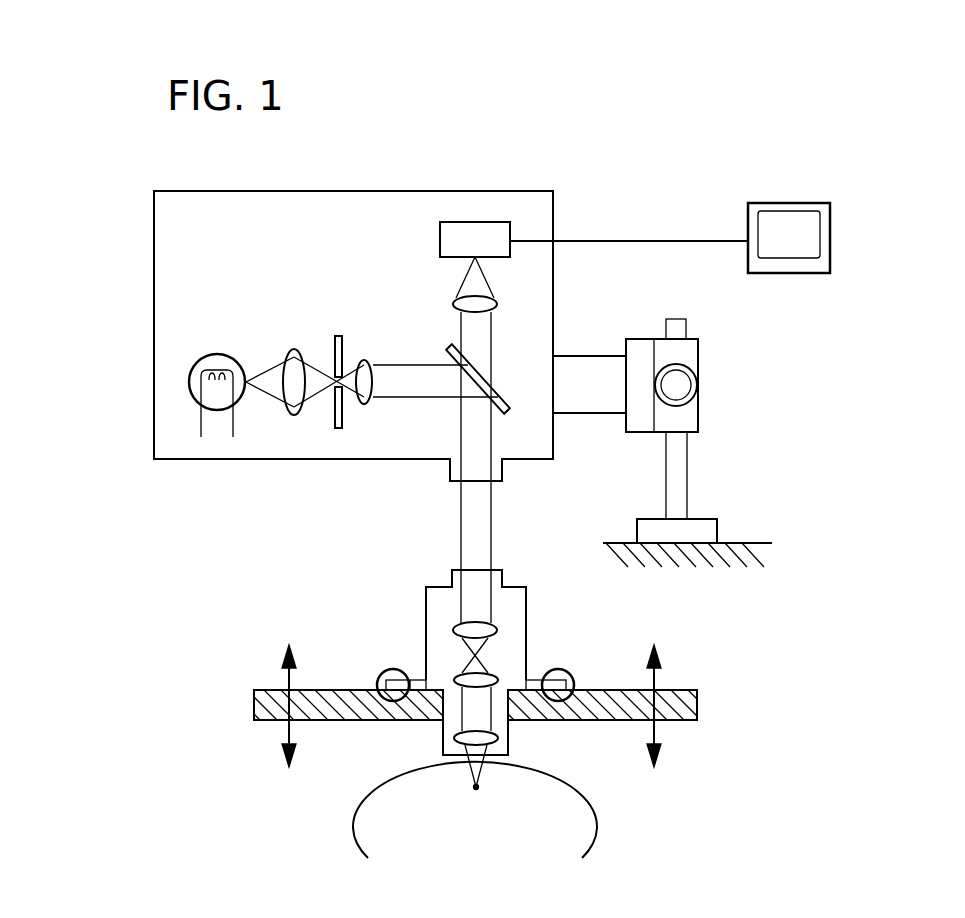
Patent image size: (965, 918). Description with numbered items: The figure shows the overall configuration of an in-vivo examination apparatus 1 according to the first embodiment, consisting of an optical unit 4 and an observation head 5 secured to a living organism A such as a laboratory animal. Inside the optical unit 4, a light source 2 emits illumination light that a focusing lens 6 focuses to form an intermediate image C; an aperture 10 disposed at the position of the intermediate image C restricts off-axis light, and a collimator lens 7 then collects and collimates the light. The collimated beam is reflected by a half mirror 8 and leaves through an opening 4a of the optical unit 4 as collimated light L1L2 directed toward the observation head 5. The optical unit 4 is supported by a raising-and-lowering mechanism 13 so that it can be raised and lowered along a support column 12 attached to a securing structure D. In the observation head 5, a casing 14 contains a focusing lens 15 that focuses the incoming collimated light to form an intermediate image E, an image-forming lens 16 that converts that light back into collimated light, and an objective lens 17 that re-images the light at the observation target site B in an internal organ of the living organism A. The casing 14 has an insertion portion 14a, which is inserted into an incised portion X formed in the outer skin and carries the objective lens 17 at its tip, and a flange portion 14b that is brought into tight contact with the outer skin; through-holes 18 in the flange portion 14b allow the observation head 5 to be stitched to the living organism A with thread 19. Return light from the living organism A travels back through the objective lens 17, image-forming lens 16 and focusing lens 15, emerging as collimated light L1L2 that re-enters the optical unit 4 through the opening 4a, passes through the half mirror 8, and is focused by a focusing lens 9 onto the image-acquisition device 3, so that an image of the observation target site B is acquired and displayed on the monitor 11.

The in-vivo examination apparatus 1 is at (908, 136).
The light source 2 is at (216, 354).
The image-acquisition device 3 is at (440, 231).
The optical unit 4 is at (555, 199).
The opening 4a is at (493, 482).
The observation head 5 is at (540, 591).
The focusing lens 6 is at (292, 349).
The collimator lens 7 is at (362, 360).
The half mirror 8 is at (494, 392).
The focusing lens 9 is at (497, 304).
The aperture 10 is at (338, 336).
The monitor 11 is at (786, 203).
The support column 12 is at (687, 458).
The raising-and-lowering mechanism 13 is at (698, 366).
The casing 14 is at (426, 602).
The insertion portion 14a is at (441, 748).
The flange portion 14b is at (522, 697).
The focusing lens 15 is at (497, 625).
The image-forming lens 16 is at (457, 671).
The objective lens 17 is at (492, 745).
The through-holes 18 is at (407, 680).
The thread 19 is at (378, 680).
The living organism A is at (685, 690).
The observation target site B is at (575, 832).
The intermediate image C is at (322, 412).
The securing structure D is at (753, 543).
The intermediate image E is at (497, 656).
The incised portion X is at (445, 703).
The collimated light L1L2 is at (460, 517).